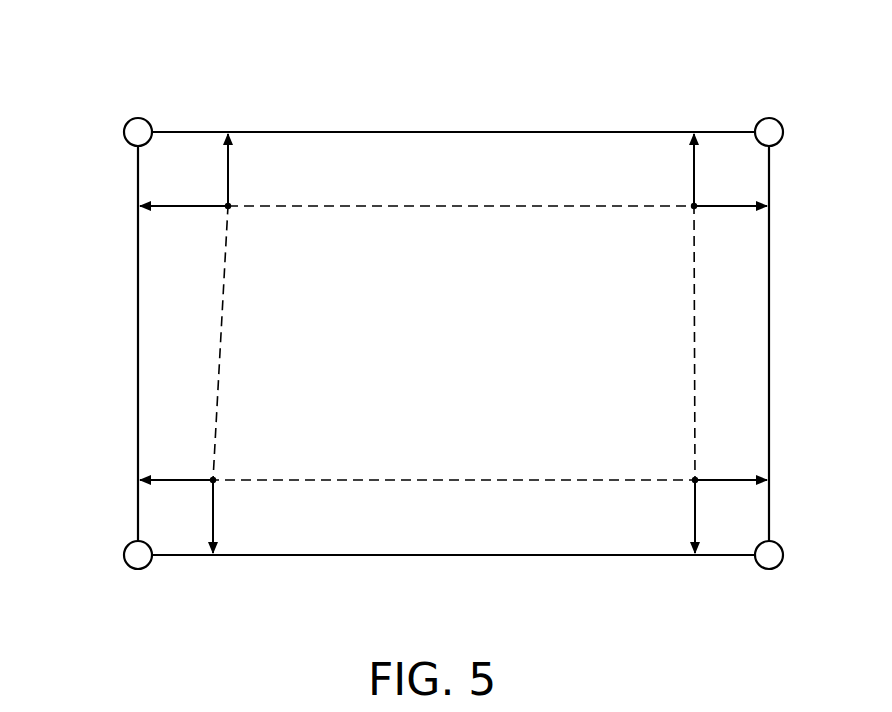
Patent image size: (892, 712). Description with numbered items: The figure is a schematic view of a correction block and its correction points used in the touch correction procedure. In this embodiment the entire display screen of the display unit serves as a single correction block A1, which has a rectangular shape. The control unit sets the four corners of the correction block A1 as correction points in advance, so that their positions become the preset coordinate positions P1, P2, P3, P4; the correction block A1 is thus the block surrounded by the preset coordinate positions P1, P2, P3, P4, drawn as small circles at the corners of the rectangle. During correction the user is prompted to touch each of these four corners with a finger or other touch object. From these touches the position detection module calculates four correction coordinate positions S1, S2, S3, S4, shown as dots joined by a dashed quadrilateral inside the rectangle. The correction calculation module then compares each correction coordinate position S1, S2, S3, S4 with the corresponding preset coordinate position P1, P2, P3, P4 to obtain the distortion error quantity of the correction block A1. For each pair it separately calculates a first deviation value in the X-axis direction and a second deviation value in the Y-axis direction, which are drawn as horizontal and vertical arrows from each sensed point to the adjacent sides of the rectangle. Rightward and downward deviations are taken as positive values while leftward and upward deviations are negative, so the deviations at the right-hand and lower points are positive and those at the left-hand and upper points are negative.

The correction block A1 is at (404, 280).
The preset coordinate position P1 is at (138, 102).
The preset coordinate position P2 is at (138, 586).
The preset coordinate position P3 is at (769, 102).
The preset coordinate position P4 is at (769, 586).
The correction coordinate position S1 is at (251, 222).
The correction coordinate position S2 is at (245, 460).
The correction coordinate position S3 is at (672, 222).
The correction coordinate position S4 is at (661, 460).